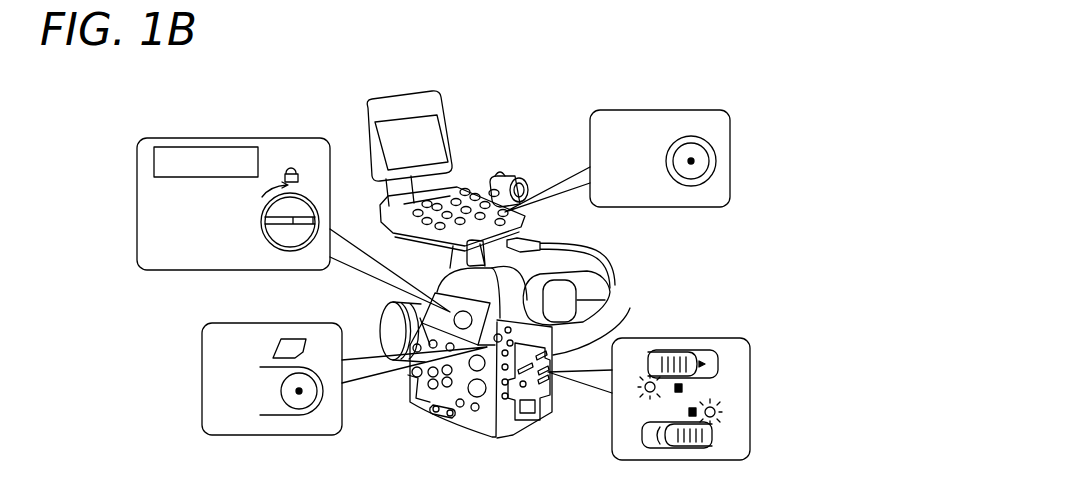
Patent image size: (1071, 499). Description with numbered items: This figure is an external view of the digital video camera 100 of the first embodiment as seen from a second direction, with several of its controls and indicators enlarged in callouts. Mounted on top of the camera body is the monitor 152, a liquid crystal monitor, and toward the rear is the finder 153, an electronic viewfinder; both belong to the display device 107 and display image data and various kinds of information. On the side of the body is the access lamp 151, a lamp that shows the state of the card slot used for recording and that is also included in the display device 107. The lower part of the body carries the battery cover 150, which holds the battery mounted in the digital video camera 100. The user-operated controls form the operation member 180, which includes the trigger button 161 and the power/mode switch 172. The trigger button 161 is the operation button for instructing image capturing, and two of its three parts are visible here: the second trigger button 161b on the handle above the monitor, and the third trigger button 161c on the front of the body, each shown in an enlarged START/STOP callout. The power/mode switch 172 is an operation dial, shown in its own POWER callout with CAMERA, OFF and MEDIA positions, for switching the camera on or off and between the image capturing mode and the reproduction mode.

The digital video camera 100 is at (785, 181).
The display device 107 is at (533, 192).
The battery cover 150 is at (533, 412).
The access lamp 151 is at (556, 366).
The monitor 152 is at (362, 108).
The finder 153 is at (565, 300).
The trigger button 161 is at (444, 194).
The second trigger button 161b is at (686, 138).
The third trigger button 161c is at (230, 323).
The power/mode switch 172 is at (217, 138).
The operation member 180 is at (486, 172).